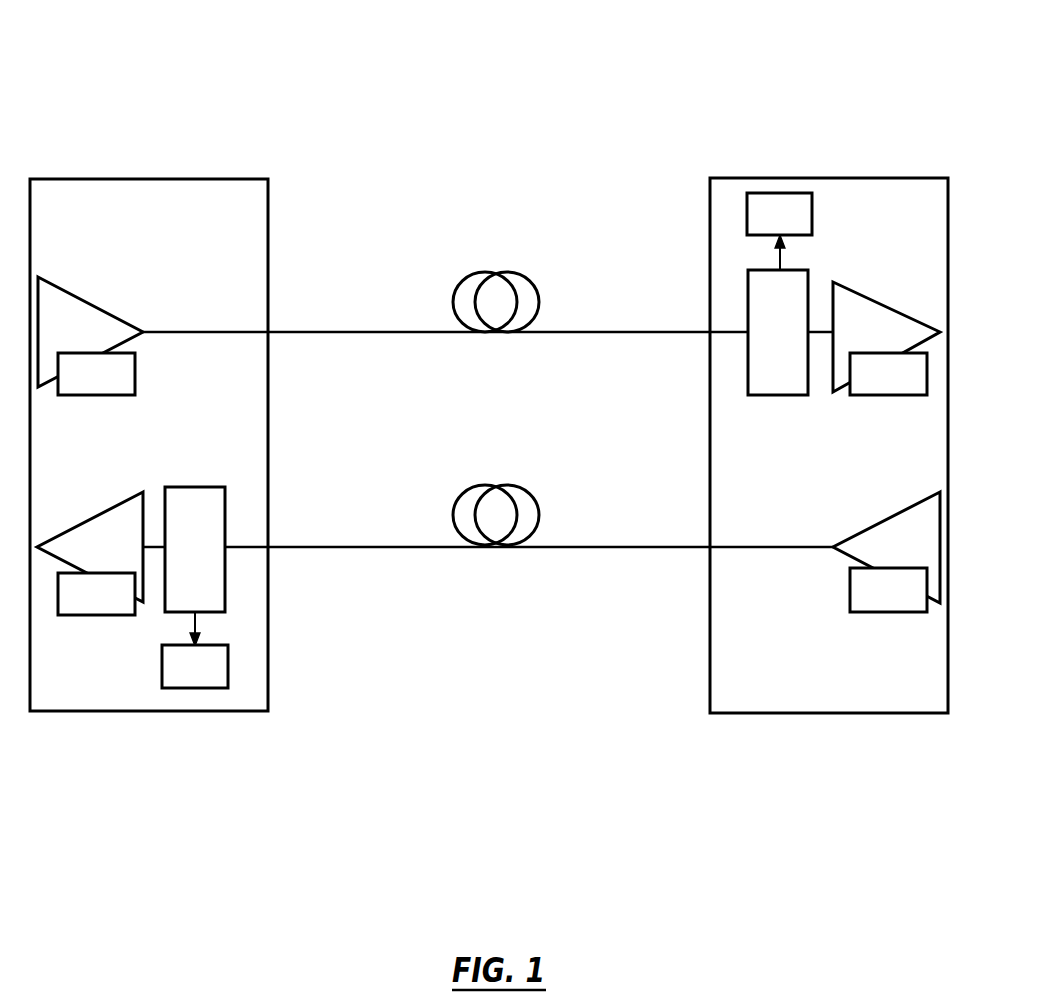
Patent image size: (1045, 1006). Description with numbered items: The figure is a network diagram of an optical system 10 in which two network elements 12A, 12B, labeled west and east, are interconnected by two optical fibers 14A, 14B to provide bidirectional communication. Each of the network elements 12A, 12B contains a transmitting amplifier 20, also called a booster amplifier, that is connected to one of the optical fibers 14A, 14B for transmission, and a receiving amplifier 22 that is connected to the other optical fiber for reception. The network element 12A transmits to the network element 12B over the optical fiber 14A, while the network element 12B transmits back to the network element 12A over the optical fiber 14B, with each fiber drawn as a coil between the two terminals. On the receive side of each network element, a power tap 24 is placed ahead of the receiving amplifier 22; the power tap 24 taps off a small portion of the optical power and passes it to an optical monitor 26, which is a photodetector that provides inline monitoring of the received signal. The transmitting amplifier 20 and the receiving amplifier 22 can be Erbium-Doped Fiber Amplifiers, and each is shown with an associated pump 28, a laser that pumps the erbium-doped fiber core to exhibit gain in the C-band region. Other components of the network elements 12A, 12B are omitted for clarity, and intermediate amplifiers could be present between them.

The optical system 10 is at (505, 64).
The network element 12A is at (240, 179).
The network element 12B is at (733, 178).
The optical fiber 14A is at (318, 332).
The optical fiber 14B is at (318, 546).
The transmitting amplifier 20 is at (96, 305).
The receiving amplifier 22 is at (129, 493).
The power tap 24 is at (199, 487).
The optical monitor 26 is at (190, 688).
The pump 28 is at (110, 395).